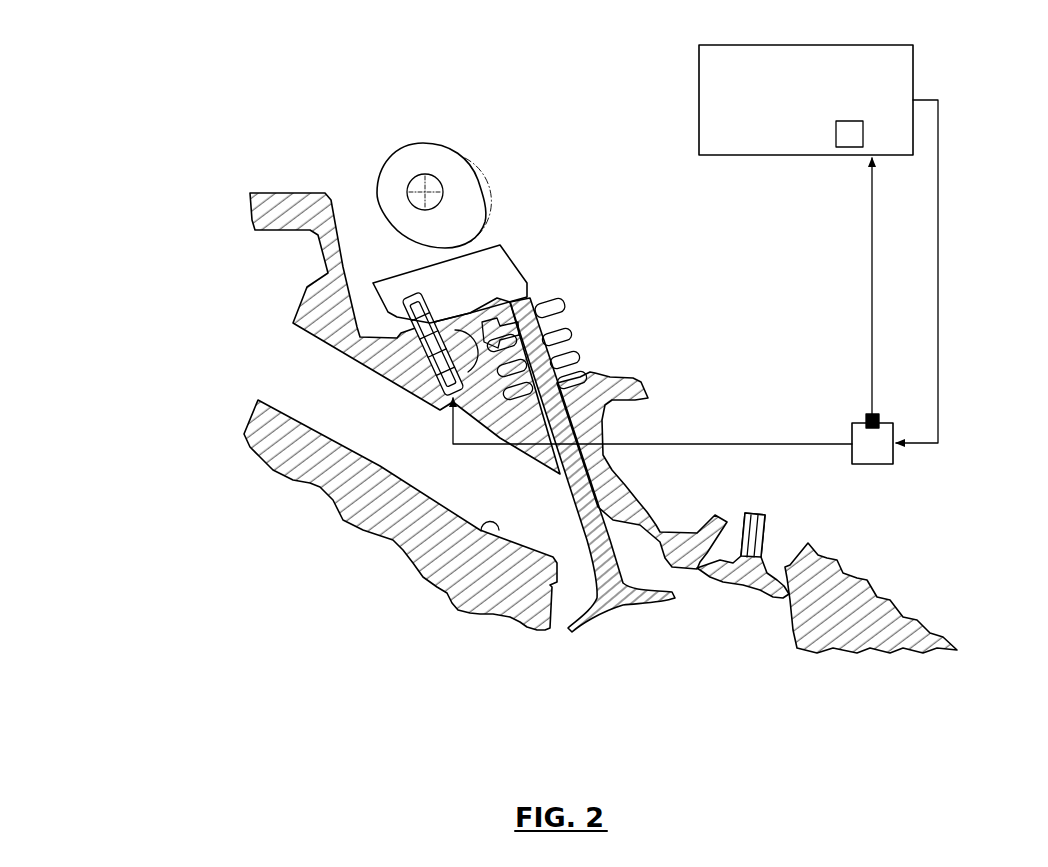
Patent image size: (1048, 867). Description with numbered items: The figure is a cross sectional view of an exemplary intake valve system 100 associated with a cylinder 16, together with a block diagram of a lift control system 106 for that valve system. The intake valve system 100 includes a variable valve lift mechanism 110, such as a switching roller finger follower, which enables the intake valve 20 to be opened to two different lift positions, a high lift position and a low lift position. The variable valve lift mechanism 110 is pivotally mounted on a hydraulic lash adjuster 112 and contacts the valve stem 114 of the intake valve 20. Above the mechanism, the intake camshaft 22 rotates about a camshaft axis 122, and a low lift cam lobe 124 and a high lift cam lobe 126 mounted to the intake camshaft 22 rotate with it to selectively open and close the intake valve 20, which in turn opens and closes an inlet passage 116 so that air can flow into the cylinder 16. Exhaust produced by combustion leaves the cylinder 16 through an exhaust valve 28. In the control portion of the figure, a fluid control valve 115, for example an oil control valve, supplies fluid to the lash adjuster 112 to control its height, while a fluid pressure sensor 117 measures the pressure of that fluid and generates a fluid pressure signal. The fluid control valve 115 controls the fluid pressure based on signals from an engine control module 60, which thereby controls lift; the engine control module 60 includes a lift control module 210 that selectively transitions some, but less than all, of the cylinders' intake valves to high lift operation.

The intake valve system 100 is at (174, 89).
The intake camshaft 22 is at (431, 172).
The camshaft axis 122 is at (417, 187).
The low lift cam lobe 124 is at (472, 170).
The high lift cam lobe 126 is at (490, 214).
The variable valve lift mechanism 110 is at (584, 210).
The valve stem 114 is at (530, 298).
The hydraulic lash adjuster 112 is at (399, 370).
The inlet passage 116 is at (488, 530).
The intake valve 20 is at (613, 547).
The exhaust valve 28 is at (768, 537).
The cylinder 16 is at (792, 615).
The lift control system 106 is at (942, 530).
The engine control module 60 is at (803, 45).
The lift control module 210 is at (836, 147).
The fluid pressure sensor 117 is at (870, 413).
The fluid control valve 115 is at (875, 465).